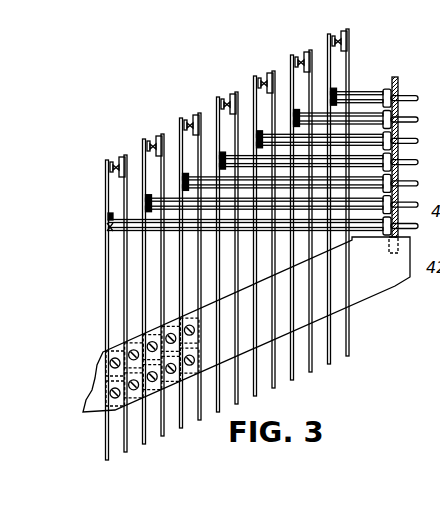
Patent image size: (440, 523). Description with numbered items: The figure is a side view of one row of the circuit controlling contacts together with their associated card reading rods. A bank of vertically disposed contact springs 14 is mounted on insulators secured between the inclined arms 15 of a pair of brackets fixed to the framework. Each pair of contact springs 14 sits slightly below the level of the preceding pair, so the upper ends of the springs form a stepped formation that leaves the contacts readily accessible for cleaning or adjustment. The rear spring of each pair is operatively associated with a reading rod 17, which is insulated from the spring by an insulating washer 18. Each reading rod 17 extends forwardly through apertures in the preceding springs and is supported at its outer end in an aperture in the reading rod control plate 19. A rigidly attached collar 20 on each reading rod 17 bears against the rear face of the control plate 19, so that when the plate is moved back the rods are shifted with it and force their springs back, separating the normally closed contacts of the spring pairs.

The contact springs 14 is at (106, 275).
The inclined arms 15 is at (373, 288).
The reading rod 17 is at (359, 95).
The insulating washer 18 is at (339, 87).
The reading rod control plate 19 is at (398, 79).
The collar 20 is at (387, 87).